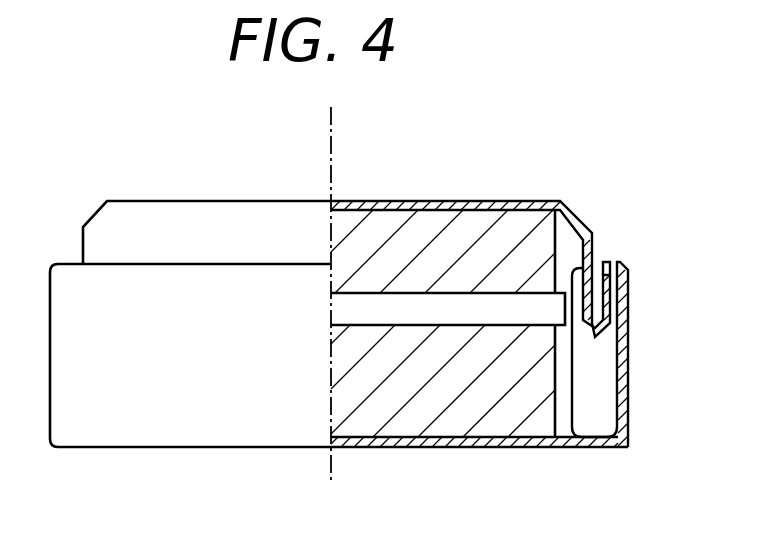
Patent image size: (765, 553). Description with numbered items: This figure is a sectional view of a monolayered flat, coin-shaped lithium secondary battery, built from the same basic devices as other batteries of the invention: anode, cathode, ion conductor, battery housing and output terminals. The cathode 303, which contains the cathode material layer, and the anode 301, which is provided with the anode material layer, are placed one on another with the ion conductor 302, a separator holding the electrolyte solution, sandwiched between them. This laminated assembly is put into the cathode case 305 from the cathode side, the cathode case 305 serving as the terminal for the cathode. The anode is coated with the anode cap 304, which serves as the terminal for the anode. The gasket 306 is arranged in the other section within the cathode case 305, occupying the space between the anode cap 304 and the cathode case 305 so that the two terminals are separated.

The anode 301 is at (397, 217).
The ion conductor 302 is at (543, 308).
The cathode 303 is at (407, 420).
The anode cap 304 is at (487, 208).
The cathode case 305 is at (482, 440).
The gasket 306 is at (605, 411).